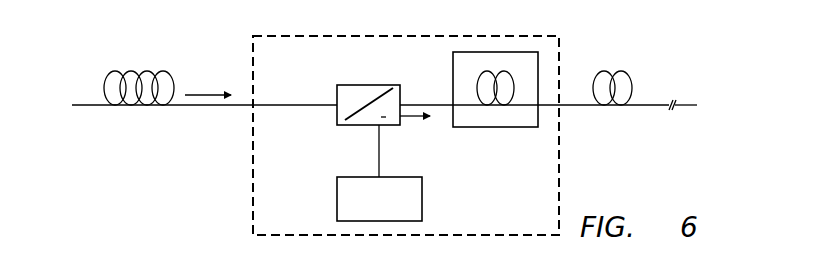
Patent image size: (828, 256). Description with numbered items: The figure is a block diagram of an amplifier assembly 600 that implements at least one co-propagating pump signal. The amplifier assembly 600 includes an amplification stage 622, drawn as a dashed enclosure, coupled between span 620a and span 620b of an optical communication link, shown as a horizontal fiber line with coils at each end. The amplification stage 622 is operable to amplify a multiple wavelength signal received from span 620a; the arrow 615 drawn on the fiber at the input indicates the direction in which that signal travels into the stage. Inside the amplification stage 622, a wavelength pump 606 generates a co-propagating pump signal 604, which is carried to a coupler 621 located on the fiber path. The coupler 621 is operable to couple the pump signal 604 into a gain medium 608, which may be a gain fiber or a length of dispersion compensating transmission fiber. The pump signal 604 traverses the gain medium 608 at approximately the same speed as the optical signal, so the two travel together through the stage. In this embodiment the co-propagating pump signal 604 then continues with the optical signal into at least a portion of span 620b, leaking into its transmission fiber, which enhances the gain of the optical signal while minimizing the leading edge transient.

The amplifier assembly 600 is at (164, 184).
The span 620a is at (132, 68).
The input optical signal 615 is at (205, 92).
The amplification stage 622 is at (507, 210).
The coupler 621 is at (337, 95).
The co-propagating pump signal 604 is at (378, 157).
The wavelength pump 606 is at (337, 197).
The gain medium 608 is at (476, 87).
The span 620b is at (622, 68).